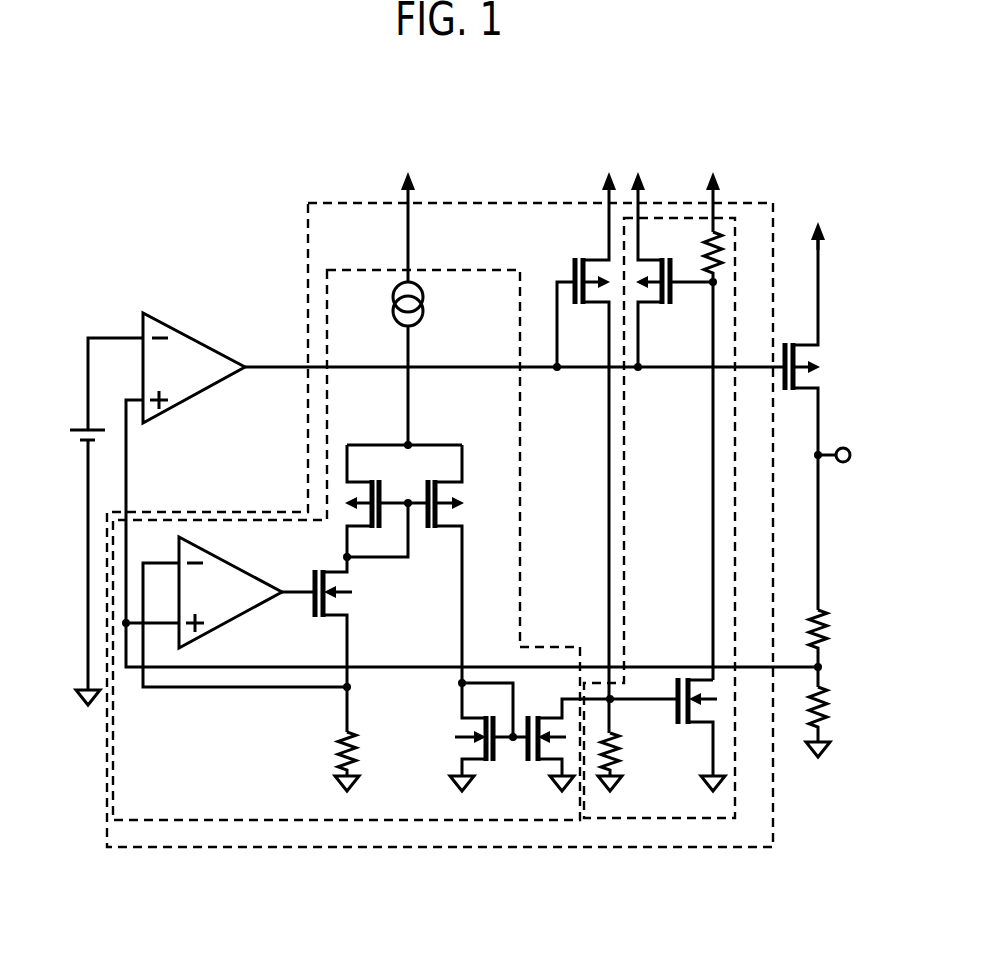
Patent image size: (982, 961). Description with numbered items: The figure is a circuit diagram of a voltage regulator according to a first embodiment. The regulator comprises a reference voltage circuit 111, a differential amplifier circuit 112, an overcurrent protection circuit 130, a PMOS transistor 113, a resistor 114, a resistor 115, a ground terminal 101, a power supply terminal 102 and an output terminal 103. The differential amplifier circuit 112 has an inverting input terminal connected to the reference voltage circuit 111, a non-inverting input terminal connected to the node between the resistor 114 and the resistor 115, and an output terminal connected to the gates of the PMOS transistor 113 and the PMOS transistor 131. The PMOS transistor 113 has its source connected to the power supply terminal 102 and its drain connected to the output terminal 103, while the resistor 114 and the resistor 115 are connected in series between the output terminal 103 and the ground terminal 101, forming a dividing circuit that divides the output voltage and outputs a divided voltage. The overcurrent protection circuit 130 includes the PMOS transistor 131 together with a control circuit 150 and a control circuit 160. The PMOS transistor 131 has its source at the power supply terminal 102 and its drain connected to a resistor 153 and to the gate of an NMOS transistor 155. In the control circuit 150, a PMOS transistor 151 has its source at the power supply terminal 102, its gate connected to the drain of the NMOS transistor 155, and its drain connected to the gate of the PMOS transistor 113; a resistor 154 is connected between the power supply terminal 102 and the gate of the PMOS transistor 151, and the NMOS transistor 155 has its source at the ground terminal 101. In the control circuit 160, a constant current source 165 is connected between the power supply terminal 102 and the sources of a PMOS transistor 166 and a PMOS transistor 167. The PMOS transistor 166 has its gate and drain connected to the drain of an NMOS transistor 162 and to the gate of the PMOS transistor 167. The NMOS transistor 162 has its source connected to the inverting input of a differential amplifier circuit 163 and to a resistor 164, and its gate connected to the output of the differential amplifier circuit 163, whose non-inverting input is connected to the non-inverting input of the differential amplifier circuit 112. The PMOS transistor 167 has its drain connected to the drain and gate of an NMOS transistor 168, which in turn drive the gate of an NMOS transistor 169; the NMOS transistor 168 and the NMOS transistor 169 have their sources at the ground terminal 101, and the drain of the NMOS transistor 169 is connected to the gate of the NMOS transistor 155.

The ground terminal 101 is at (818, 764).
The power supply terminal 102 is at (818, 219).
The output terminal 103 is at (848, 446).
The reference voltage circuit 111 is at (72, 443).
The differential amplifier circuit 112 is at (150, 310).
The PMOS transistor 113 is at (822, 370).
The resistor 114 is at (833, 630).
The resistor 115 is at (835, 705).
The overcurrent protection circuit 130 is at (207, 852).
The PMOS transistor 131 is at (590, 240).
The control circuit 150 is at (620, 828).
The PMOS transistor 151 is at (650, 255).
The resistor 153 is at (630, 753).
The resistor 154 is at (725, 225).
The NMOS transistor 155 is at (693, 668).
The control circuit 160 is at (350, 824).
The NMOS transistor 162 is at (358, 602).
The differential amplifier circuit 163 is at (220, 546).
The resistor 164 is at (328, 750).
The constant current source 165 is at (383, 295).
The PMOS transistor 166 is at (365, 470).
The PMOS transistor 167 is at (472, 468).
The NMOS transistor 168 is at (452, 742).
The NMOS transistor 169 is at (543, 707).